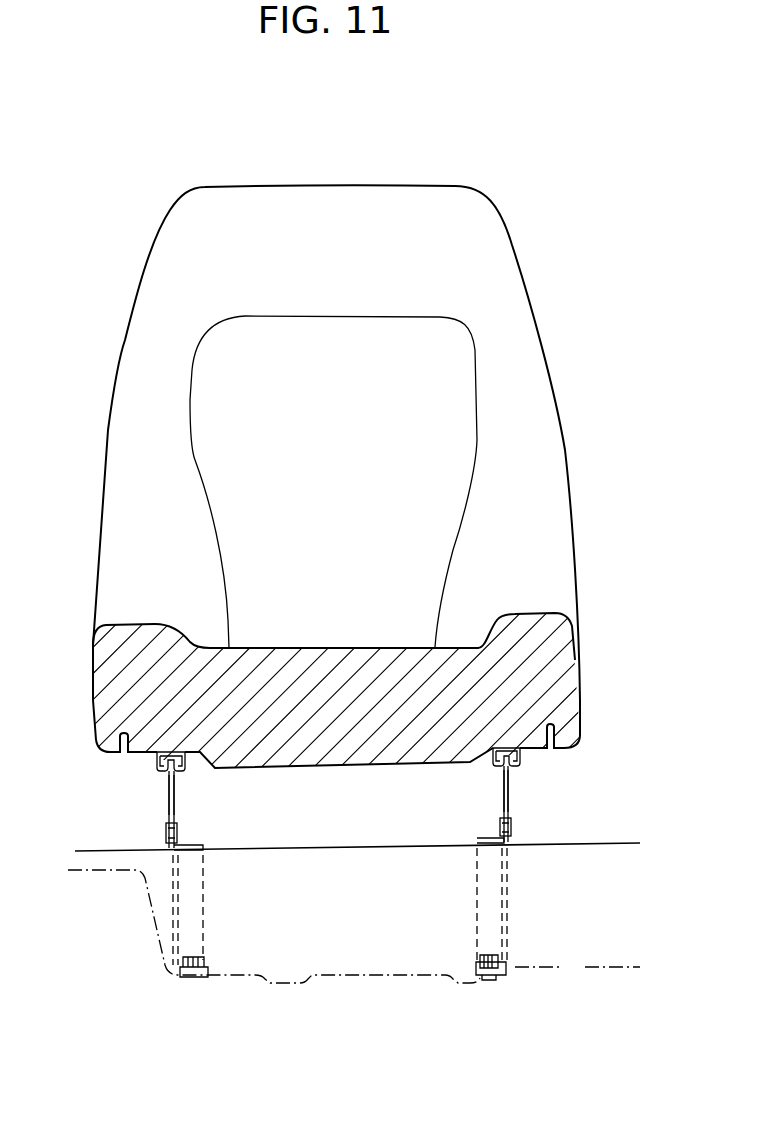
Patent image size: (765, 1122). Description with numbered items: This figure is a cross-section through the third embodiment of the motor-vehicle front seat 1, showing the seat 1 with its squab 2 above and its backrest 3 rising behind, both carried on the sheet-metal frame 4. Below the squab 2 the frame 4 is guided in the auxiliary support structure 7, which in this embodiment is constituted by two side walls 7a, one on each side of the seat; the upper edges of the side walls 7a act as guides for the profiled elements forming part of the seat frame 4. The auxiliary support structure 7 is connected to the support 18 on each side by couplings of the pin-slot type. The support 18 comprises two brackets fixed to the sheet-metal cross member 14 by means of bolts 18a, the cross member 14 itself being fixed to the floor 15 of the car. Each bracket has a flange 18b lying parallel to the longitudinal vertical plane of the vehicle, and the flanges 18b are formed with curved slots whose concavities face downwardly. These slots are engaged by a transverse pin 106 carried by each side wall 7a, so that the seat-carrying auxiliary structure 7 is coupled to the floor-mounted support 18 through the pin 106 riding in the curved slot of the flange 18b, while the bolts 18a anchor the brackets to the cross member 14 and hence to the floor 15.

The seat 1 is at (588, 300).
The squab 2 is at (345, 670).
The backrest 3 is at (460, 447).
The sheet-metal frame 4 is at (148, 770).
The auxiliary support structure 7 is at (512, 797).
The side walls 7a is at (175, 788).
The cross member 14 is at (360, 858).
The floor 15 is at (572, 967).
The support 18 is at (387, 886).
The bolts 18a is at (208, 957).
The flanges 18b is at (176, 826).
The transverse pin 106 is at (165, 835).